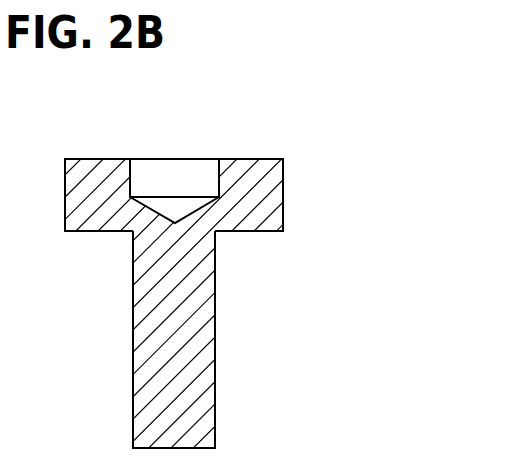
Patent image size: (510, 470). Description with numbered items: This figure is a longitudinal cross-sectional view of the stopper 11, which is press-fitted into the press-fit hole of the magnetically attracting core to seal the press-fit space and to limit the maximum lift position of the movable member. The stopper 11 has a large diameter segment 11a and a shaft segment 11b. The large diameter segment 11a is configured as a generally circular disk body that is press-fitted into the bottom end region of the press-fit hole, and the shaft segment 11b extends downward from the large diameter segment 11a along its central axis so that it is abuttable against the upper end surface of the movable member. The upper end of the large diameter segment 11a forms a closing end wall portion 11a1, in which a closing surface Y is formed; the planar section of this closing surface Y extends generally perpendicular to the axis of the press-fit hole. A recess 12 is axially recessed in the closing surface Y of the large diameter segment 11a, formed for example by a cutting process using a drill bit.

The stopper 11 is at (255, 278).
The large diameter segment 11a is at (243, 232).
The closing end wall portion 11a1 is at (273, 158).
The shaft segment 11b is at (215, 363).
The recess 12 is at (160, 168).
The closing surface Y is at (240, 158).